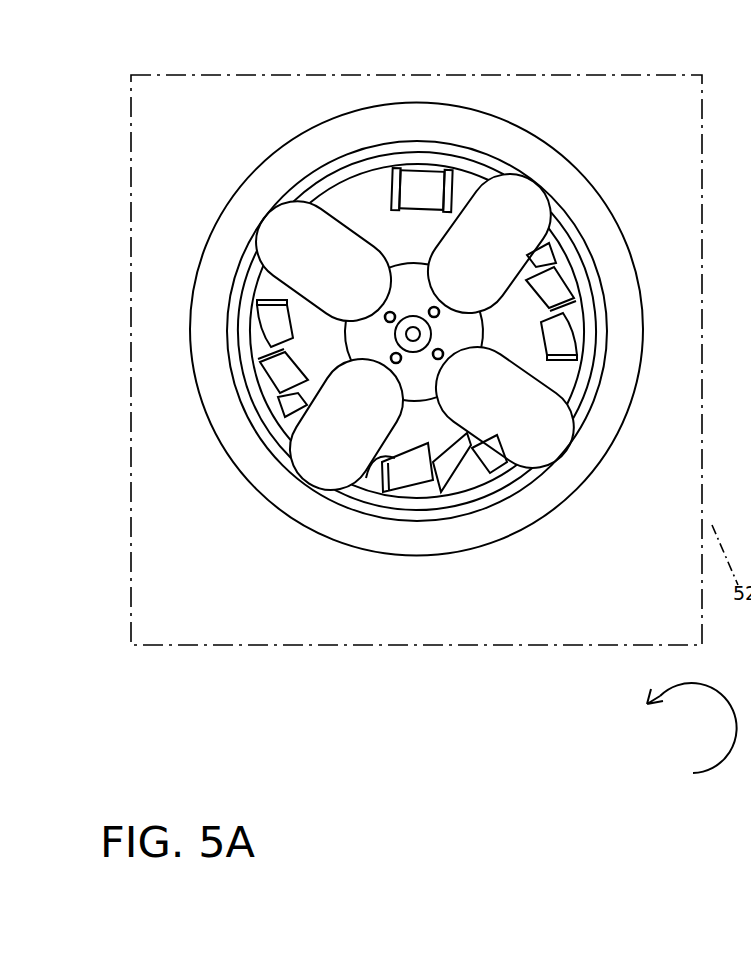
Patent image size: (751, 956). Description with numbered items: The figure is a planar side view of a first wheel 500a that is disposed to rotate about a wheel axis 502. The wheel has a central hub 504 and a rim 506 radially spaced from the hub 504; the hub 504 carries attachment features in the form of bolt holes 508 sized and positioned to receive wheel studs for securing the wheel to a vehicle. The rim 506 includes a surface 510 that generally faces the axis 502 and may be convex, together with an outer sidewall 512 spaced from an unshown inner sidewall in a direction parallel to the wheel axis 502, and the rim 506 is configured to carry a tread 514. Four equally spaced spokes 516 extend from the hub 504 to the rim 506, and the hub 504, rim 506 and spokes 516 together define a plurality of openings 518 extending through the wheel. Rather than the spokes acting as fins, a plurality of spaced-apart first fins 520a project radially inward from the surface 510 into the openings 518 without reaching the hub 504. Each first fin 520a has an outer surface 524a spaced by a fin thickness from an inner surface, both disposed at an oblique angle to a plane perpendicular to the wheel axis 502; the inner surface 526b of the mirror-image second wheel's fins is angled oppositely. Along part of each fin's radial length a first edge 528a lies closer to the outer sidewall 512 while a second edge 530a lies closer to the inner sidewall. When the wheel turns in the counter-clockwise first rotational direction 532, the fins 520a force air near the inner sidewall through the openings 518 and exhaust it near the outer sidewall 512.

The first wheel 500a is at (583, 48).
The wheel axis 502 is at (413, 334).
The hub 504 is at (383, 346).
The rim 506 is at (267, 403).
The bolt holes 508 is at (443, 357).
The surface 510 is at (575, 327).
The outer sidewall 512 is at (240, 373).
The tread 514 is at (557, 487).
The spokes 516 is at (329, 267).
The openings 518 is at (449, 224).
The first fins 520a is at (553, 297).
The outer surface 524a is at (415, 473).
The inner surface 526b is at (383, 487).
The first edge 528a is at (403, 470).
The second edge 530a is at (465, 470).
The first rotational direction 532 is at (681, 728).